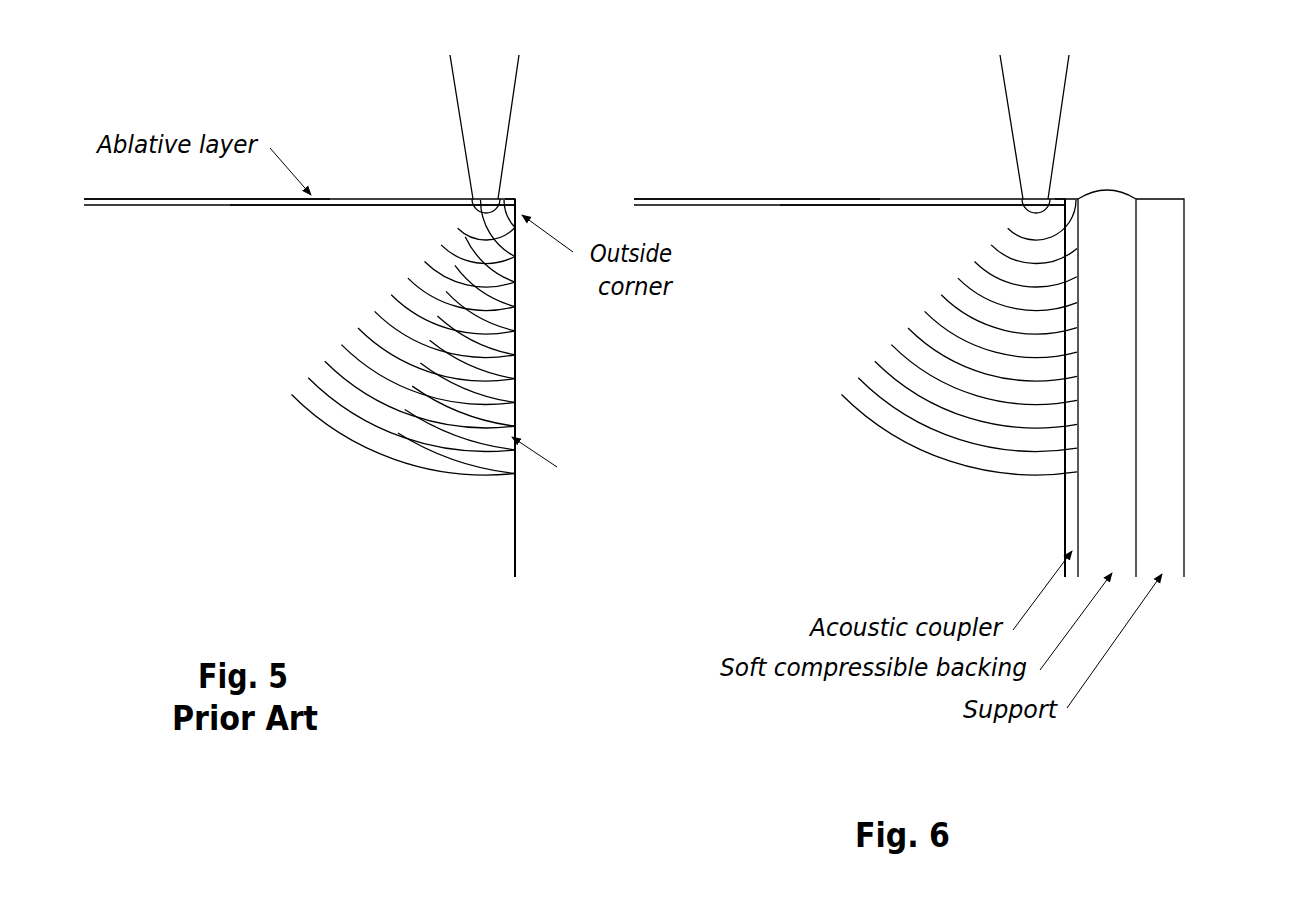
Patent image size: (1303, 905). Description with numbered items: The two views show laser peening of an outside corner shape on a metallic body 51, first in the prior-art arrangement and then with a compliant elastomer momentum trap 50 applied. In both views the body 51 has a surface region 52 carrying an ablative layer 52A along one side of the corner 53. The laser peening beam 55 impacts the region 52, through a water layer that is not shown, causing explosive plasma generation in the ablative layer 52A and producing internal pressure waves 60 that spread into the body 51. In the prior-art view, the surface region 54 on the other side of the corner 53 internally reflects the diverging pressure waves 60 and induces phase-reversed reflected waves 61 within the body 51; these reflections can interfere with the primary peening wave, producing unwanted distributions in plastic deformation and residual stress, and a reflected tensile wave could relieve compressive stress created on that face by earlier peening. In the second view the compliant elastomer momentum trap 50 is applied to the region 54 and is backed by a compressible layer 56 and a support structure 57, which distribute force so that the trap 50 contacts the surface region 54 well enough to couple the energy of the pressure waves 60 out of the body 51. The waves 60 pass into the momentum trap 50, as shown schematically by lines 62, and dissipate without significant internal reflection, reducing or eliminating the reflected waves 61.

In FIG. 6, the compliant momentum trap 50 is at (1072, 203).
In FIG. 5, the metallic body 51 is at (183, 361).
In FIG. 5, the surface region 52 is at (336, 204).
In FIG. 6, the surface region 52 is at (888, 204).
In FIG. 5, the ablative layer 52A is at (315, 197).
In FIG. 6, the ablative layer 52A is at (866, 197).
In FIG. 5, the corner 53 is at (516, 199).
In FIG. 6, the corner 53 is at (1067, 199).
In FIG. 5, the surface region 54 is at (515, 405).
In FIG. 5, the laser peening beam 55 is at (501, 96).
In FIG. 6, the laser peening beam 55 is at (1053, 95).
In FIG. 6, the compressible layer 56 is at (1108, 223).
In FIG. 6, the support structure 57 is at (1162, 262).
In FIG. 5, the internal pressure waves 60 is at (373, 445).
In FIG. 6, the internal pressure waves 60 is at (923, 445).
In FIG. 5, the phase-reversed reflected waves 61 is at (395, 443).
In FIG. 6, the lines 62 is at (1072, 463).